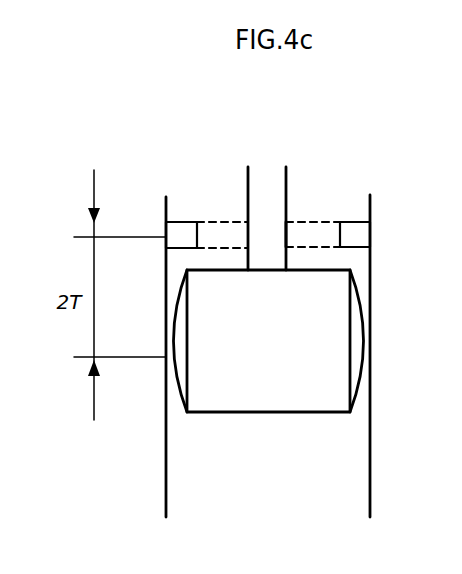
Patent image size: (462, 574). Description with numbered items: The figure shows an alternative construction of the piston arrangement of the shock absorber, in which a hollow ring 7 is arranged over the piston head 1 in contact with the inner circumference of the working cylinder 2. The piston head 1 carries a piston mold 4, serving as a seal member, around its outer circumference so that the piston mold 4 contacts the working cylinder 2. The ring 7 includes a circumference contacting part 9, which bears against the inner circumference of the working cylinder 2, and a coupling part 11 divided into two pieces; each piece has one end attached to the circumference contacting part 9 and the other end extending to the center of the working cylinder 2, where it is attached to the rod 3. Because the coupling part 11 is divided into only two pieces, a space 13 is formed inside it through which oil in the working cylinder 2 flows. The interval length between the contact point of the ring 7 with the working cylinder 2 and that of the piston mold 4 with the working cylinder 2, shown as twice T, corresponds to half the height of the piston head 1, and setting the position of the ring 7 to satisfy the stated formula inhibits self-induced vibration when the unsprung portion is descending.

The piston head 1 is at (265, 393).
The working cylinder 2 is at (372, 480).
The rod 3 is at (287, 167).
The piston mold 4 is at (363, 342).
The hollow ring 7 is at (227, 196).
The circumference contacting part 9 is at (178, 232).
The coupling part 11 is at (215, 222).
The space 13 is at (298, 233).